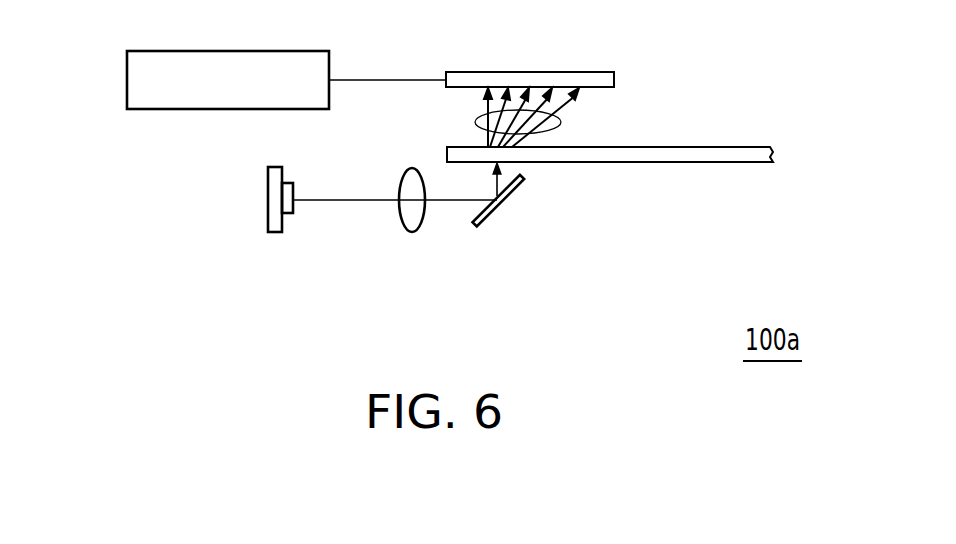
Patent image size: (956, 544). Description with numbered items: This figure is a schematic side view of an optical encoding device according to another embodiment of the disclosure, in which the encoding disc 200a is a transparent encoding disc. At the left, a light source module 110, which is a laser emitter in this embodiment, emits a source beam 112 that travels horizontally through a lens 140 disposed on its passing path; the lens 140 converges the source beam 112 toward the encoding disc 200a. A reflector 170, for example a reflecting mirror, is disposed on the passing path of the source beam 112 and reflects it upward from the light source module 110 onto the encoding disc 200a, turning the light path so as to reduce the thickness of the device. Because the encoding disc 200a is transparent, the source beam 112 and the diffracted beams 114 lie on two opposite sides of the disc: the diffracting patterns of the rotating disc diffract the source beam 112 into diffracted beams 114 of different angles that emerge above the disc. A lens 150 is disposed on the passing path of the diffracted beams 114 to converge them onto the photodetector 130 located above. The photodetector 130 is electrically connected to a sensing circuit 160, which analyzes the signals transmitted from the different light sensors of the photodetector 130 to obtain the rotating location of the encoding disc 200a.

The light source module 110 is at (268, 218).
The source beam 112 is at (338, 200).
The diffracted beams 114 is at (567, 103).
The photodetector 130 is at (603, 75).
The lens 140 is at (412, 232).
The lens 150 is at (553, 131).
The sensing circuit 160 is at (127, 80).
The reflector 170 is at (485, 222).
The encoding disc 200a is at (743, 155).